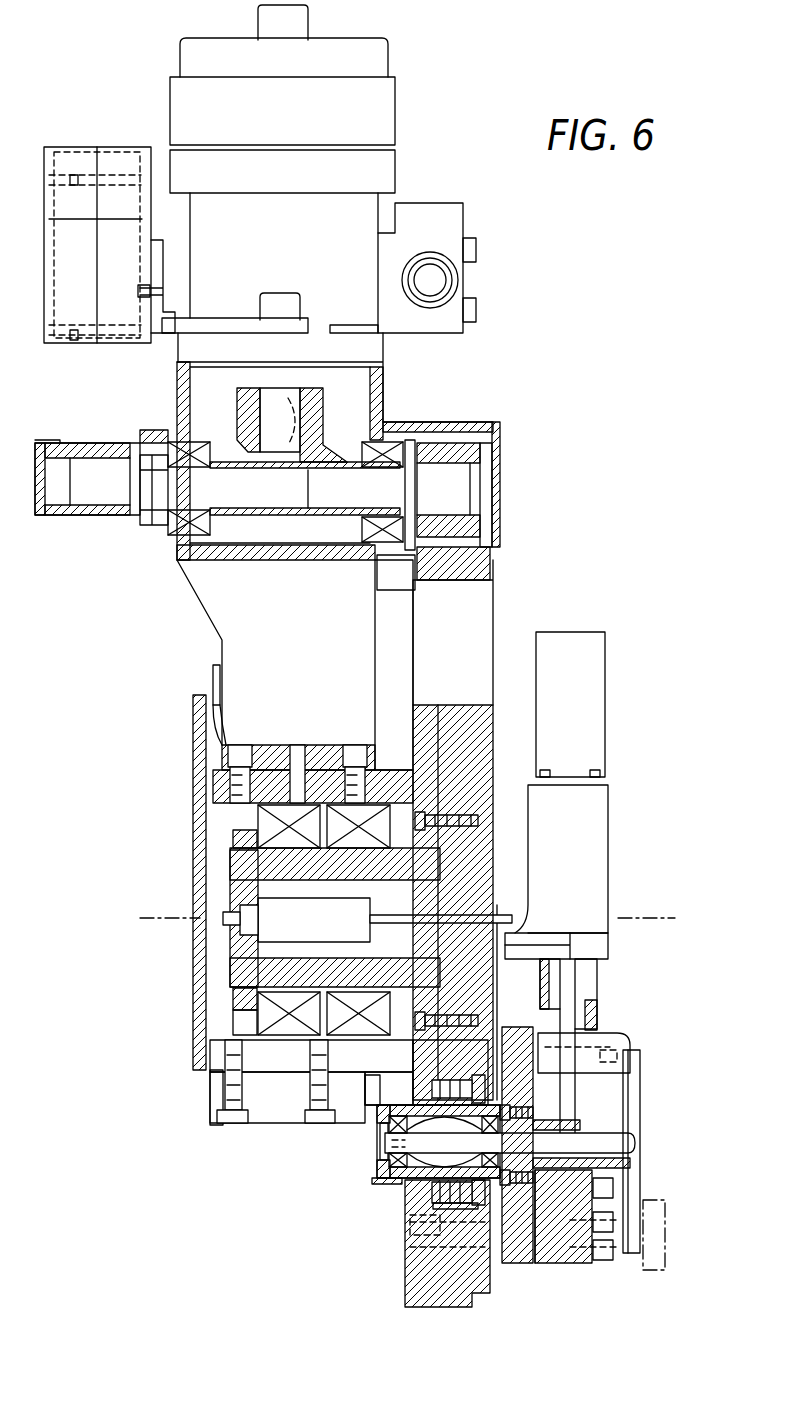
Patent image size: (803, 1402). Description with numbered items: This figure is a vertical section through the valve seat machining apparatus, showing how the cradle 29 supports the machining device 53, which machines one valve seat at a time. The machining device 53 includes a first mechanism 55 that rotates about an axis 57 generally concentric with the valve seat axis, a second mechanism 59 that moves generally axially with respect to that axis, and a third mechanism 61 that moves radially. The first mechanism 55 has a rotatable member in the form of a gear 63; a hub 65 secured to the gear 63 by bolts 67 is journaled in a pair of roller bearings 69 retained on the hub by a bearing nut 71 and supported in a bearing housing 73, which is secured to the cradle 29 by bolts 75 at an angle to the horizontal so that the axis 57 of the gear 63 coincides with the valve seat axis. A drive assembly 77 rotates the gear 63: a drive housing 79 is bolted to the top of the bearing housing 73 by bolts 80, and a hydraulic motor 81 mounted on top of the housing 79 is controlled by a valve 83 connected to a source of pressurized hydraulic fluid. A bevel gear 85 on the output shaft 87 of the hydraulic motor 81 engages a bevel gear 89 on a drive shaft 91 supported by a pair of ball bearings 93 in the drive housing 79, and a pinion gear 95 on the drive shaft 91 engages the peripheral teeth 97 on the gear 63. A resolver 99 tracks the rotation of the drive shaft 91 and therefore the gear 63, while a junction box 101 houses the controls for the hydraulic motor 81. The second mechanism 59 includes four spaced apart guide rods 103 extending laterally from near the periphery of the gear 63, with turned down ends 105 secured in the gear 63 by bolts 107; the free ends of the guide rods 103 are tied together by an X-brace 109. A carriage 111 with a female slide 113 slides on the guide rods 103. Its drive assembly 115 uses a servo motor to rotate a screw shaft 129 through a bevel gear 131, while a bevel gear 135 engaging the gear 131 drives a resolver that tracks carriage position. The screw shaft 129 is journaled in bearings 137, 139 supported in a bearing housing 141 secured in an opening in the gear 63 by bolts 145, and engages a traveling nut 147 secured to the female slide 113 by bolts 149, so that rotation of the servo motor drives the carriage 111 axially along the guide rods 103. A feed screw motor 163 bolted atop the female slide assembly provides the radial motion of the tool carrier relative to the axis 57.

The cradle 29 is at (280, 1112).
The machining device 53 is at (591, 480).
The first mechanism 55 is at (526, 608).
The axis 57 is at (152, 927).
The second mechanism 59 is at (546, 1309).
The third mechanism 61 is at (666, 1098).
The gear 63 is at (482, 860).
The hub 65 is at (253, 862).
The bolts 67 is at (480, 812).
The roller bearings 69 is at (268, 822).
The bearing nut 71 is at (237, 1000).
The bearing housing 73 is at (390, 773).
The bolts 75 is at (225, 1092).
The drive assembly 77 is at (468, 362).
The drive housing 79 is at (377, 373).
The bolts 80 is at (240, 748).
The hydraulic motor 81 is at (388, 98).
The valve 83 is at (418, 210).
The bevel gear 85 is at (247, 408).
The output shaft 87 is at (268, 395).
The bevel gear 89 is at (347, 457).
The drive shaft 91 is at (462, 503).
The ball bearings 93 is at (397, 448).
The pinion gear 95 is at (500, 423).
The peripheral teeth 97 is at (457, 543).
The resolver 99 is at (78, 502).
The junction box 101 is at (77, 150).
The guide rods 103 is at (607, 1043).
The turned down ends 105 is at (400, 1275).
The bolts 107 is at (400, 1258).
The X-brace 109 is at (637, 1077).
The carriage 111 is at (513, 1290).
The female slide 113 is at (520, 1257).
The drive assembly 115 is at (382, 1130).
The screw shaft 129 is at (623, 1148).
The bevel gear 131 is at (483, 1122).
The bevel gear 135 is at (432, 1188).
The bearing 137 is at (392, 1163).
The bearing 139 is at (600, 1123).
The bearing housing 141 is at (375, 1182).
The bolts 145 is at (443, 1200).
The traveling nut 147 is at (595, 1173).
The bolts 149 is at (527, 1187).
The feed screw motor 163 is at (400, 1103).